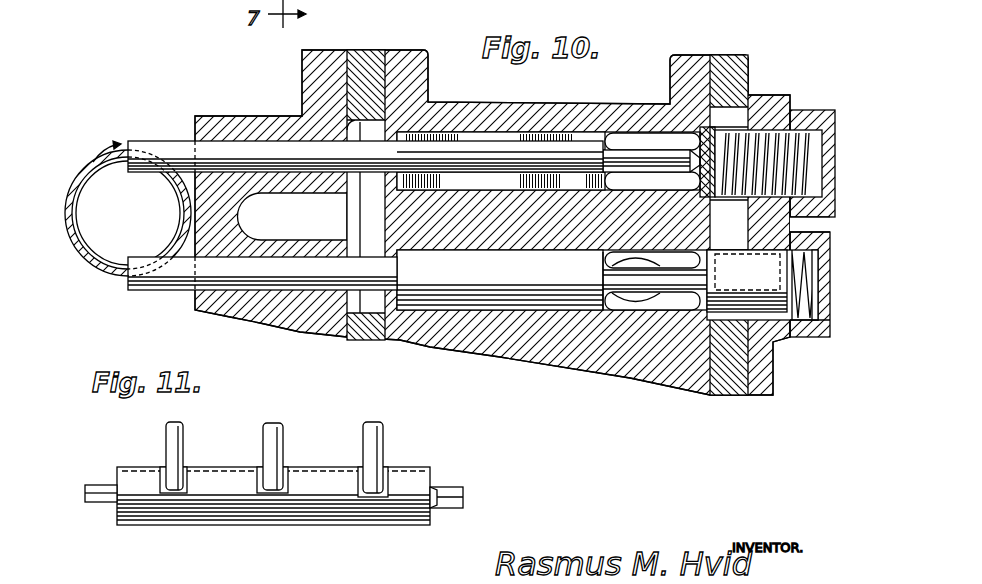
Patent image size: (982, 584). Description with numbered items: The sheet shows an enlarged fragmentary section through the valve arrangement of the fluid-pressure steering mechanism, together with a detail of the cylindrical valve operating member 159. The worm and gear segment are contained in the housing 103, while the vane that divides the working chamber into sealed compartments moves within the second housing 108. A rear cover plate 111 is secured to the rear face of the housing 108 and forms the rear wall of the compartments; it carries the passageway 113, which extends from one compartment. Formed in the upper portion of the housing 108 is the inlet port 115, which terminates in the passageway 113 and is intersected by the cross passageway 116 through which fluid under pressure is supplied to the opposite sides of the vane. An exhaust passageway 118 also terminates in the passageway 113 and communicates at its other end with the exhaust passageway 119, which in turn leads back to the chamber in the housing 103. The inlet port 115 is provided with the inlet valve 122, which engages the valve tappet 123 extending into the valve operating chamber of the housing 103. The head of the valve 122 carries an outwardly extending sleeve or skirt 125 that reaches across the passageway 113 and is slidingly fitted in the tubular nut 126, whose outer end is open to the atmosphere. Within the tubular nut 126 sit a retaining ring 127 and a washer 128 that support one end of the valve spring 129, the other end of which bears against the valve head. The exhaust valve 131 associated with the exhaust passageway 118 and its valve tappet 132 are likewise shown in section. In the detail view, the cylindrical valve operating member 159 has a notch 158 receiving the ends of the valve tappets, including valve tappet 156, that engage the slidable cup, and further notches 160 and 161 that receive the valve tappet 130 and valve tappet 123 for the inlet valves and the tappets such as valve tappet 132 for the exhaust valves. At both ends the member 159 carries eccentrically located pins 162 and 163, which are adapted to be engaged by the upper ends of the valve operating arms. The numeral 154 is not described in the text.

In FIG. 10, the housing 103 is at (156, 13).
In FIG. 10, the lever 154 is at (322, 14).
In FIG. 10, the rear cover plate 111 is at (733, 55).
In FIG. 10, the second housing 108 is at (530, 108).
In FIG. 10, the passageway 113 is at (730, 380).
In FIG. 10, the inlet port 115 is at (673, 303).
In FIG. 10, the cross passageway 116 is at (622, 287).
In FIG. 10, the exhaust passageway 118 is at (631, 145).
In FIG. 10, the exhaust passageway 119 is at (352, 328).
In FIG. 10, the inlet valve 122 is at (640, 262).
In FIG. 10, the valve tappet 123 is at (177, 273).
In FIG. 10, the sleeve or skirt 125 is at (750, 281).
In FIG. 10, the tubular nut 126 is at (815, 112).
In FIG. 10, the retaining ring 127 is at (822, 305).
In FIG. 10, the washer 128 is at (800, 338).
In FIG. 10, the valve spring 129 is at (800, 143).
In FIG. 11, the valve tappet 130 is at (372, 440).
In FIG. 10, the exhaust valve 131 is at (658, 157).
In FIG. 10, the valve tappet 132 is at (160, 146).
In FIG. 11, the valve tappet 132 is at (178, 452).
In FIG. 11, the valve tappet 156 is at (276, 440).
In FIG. 11, the notch 158 is at (290, 478).
In FIG. 10, the cylindrical valve operating member 159 is at (70, 190).
In FIG. 11, the cylindrical valve operating member 159 is at (328, 512).
In FIG. 11, the notch 160 is at (386, 478).
In FIG. 10, the notch 161 is at (182, 196).
In FIG. 11, the notch 161 is at (160, 483).
In FIG. 11, the eccentrically located pin 162 is at (466, 497).
In FIG. 11, the eccentrically located pin 163 is at (100, 496).